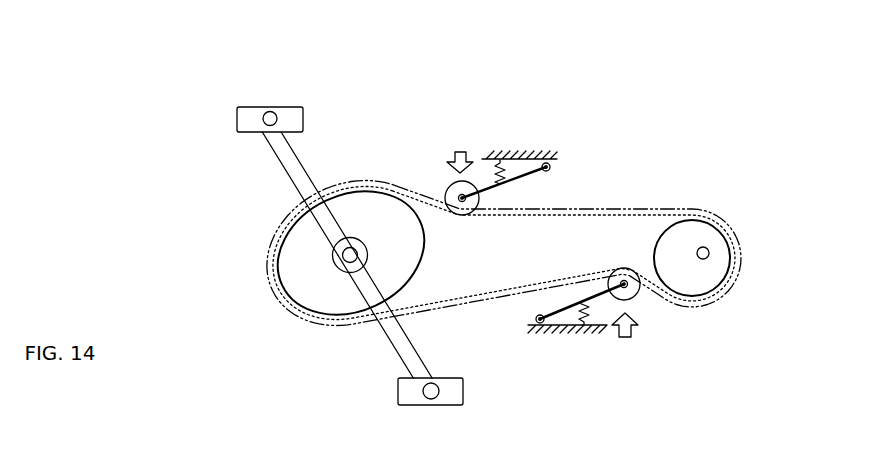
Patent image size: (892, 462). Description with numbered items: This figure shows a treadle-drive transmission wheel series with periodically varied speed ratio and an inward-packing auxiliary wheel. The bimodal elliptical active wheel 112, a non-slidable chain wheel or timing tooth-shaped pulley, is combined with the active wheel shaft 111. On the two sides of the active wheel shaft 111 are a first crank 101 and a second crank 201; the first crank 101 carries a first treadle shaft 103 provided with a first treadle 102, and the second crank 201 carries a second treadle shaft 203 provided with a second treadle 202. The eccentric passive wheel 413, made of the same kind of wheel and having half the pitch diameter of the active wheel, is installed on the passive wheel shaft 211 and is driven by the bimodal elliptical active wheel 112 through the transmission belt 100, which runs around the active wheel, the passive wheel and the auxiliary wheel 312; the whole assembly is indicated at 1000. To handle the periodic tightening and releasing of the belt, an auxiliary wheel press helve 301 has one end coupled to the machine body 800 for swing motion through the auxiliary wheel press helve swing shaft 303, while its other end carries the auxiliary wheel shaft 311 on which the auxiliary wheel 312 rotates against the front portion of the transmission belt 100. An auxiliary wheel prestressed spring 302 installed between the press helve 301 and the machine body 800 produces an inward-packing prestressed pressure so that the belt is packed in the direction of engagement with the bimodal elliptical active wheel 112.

The transmission belt 100 is at (610, 210).
The first crank 101 is at (293, 180).
The first treadle 102 is at (273, 107).
The first treadle shaft 103 is at (263, 118).
The active wheel shaft 111 is at (343, 267).
The bimodal elliptical active wheel 112 is at (288, 232).
The second crank 201 is at (393, 350).
The second treadle 202 is at (395, 390).
The second treadle shaft 203 is at (440, 390).
The passive wheel shaft 211 is at (708, 256).
The auxiliary wheel press helve 301 is at (530, 173).
The auxiliary wheel prestressed spring 302 is at (483, 157).
The auxiliary wheel press helve swing shaft 303 is at (551, 170).
The auxiliary wheel shaft 311 is at (457, 213).
The auxiliary wheel 312 is at (447, 198).
The eccentric passive wheel 413 is at (730, 243).
The machine body 800 is at (517, 153).
The driven pulley assembly 1000 is at (720, 247).